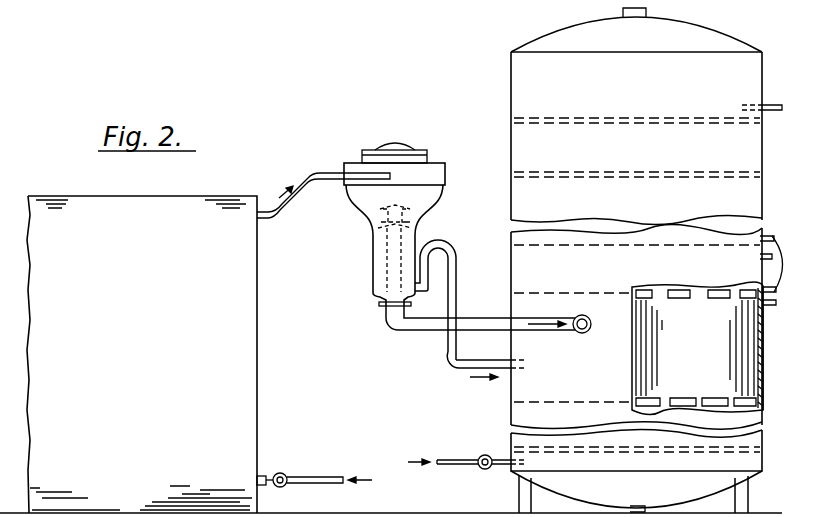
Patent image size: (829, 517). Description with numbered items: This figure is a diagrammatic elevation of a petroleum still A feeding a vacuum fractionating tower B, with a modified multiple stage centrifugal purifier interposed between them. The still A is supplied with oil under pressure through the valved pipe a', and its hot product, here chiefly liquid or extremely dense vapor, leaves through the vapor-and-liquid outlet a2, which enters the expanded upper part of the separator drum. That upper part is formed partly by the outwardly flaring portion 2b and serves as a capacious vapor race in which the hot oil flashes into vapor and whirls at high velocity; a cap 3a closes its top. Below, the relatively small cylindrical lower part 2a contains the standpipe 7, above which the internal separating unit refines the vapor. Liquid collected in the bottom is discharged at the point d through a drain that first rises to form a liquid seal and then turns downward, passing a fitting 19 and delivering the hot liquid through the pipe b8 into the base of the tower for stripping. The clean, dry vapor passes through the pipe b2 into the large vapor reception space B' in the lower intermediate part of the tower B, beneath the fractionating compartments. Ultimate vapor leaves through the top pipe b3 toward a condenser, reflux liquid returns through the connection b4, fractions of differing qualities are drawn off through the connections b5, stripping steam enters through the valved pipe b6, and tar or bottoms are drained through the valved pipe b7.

The petroleum still A is at (142, 354).
The valved pipe a' is at (314, 472).
The vapor-and-liquid outlet a2 is at (266, 222).
The cap 3a is at (405, 138).
The lower part of separator drum 2a is at (430, 166).
The outwardly flaring portion 2b is at (426, 194).
The standpipe 7 is at (408, 240).
The flange 19 is at (420, 292).
The drain d is at (440, 262).
The pipe b2 is at (477, 322).
The pipe b8 is at (477, 366).
The fractionating tower B is at (636, 265).
The vapor reception space B' is at (697, 348).
The pipe b3 is at (648, 14).
The connection b4 is at (763, 98).
The connections b5 is at (773, 261).
The valved pipe b6 is at (460, 462).
The valved pipe b7 is at (630, 508).